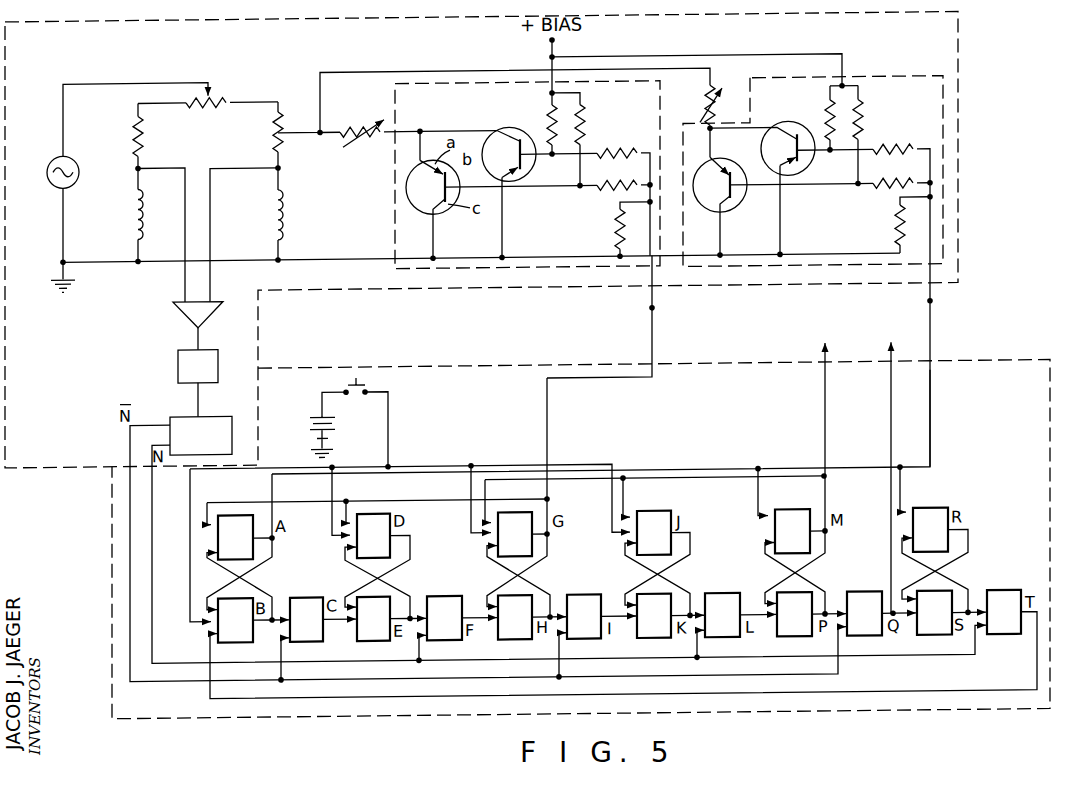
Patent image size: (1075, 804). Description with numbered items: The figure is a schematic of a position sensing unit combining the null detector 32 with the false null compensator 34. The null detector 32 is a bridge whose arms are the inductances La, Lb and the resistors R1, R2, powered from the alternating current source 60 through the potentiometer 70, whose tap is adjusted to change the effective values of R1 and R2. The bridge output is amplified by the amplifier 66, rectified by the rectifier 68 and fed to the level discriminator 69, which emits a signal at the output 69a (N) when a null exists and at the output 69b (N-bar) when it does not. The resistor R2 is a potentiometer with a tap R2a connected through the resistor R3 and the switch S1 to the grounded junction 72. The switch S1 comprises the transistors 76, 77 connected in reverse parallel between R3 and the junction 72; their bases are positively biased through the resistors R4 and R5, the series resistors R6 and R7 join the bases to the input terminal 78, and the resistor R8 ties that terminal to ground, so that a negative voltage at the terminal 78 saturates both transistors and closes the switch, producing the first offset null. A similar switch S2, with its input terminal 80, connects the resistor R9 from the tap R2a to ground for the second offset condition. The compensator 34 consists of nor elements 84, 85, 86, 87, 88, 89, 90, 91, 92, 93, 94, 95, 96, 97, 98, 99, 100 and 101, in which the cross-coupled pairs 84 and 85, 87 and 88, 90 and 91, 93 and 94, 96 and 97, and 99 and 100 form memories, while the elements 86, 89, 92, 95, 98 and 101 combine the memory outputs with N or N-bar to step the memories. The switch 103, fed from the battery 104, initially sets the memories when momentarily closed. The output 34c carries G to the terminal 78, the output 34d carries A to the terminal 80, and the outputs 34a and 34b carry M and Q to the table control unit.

The null detector 32 is at (1010, 121).
The false null compensator 34 is at (994, 368).
The compensator output 34a is at (824, 420).
The compensator output 34b is at (891, 425).
The compensator output 34c is at (547, 456).
The compensator output 34d is at (932, 417).
The alternating current source 60 is at (54, 187).
The amplifier 66 is at (183, 320).
The rectifier 68 is at (178, 376).
The level discriminator 69 is at (220, 422).
The discriminator output 69a is at (157, 466).
The discriminator output 69b is at (148, 426).
The potentiometer 70 is at (210, 112).
The grounded junction 72 is at (70, 268).
The transistor 76 is at (488, 194).
The transistor 77 is at (525, 182).
The input terminal 78 is at (652, 315).
The input terminal 80 is at (932, 313).
The switch 103 is at (342, 396).
The battery 104 is at (308, 438).
The nor element 84 is at (235, 537).
The nor element 85 is at (235, 620).
The nor element 86 is at (306, 619).
The nor element 87 is at (373, 536).
The nor element 88 is at (373, 619).
The nor element 89 is at (444, 618).
The nor element 90 is at (515, 534).
The nor element 91 is at (515, 617).
The nor element 92 is at (584, 616).
The nor element 93 is at (654, 533).
The nor element 94 is at (654, 616).
The nor element 95 is at (722, 615).
The nor element 96 is at (792, 531).
The nor element 97 is at (794, 614).
The nor element 98 is at (864, 613).
The nor element 99 is at (930, 530).
The nor element 100 is at (934, 613).
The nor element 101 is at (1004, 612).
The resistor R1 is at (154, 135).
The resistor R2 is at (263, 135).
The tap R2a is at (318, 130).
The resistor R3 is at (370, 140).
The resistor R4 is at (597, 144).
The resistor R5 is at (539, 123).
The resistor R6 is at (615, 196).
The resistor R7 is at (601, 155).
The resistor R8 is at (619, 229).
The resistor R9 is at (726, 107).
The inductance La is at (155, 214).
The inductance Lb is at (263, 214).
The switch S1 is at (662, 120).
The switch S2 is at (866, 279).